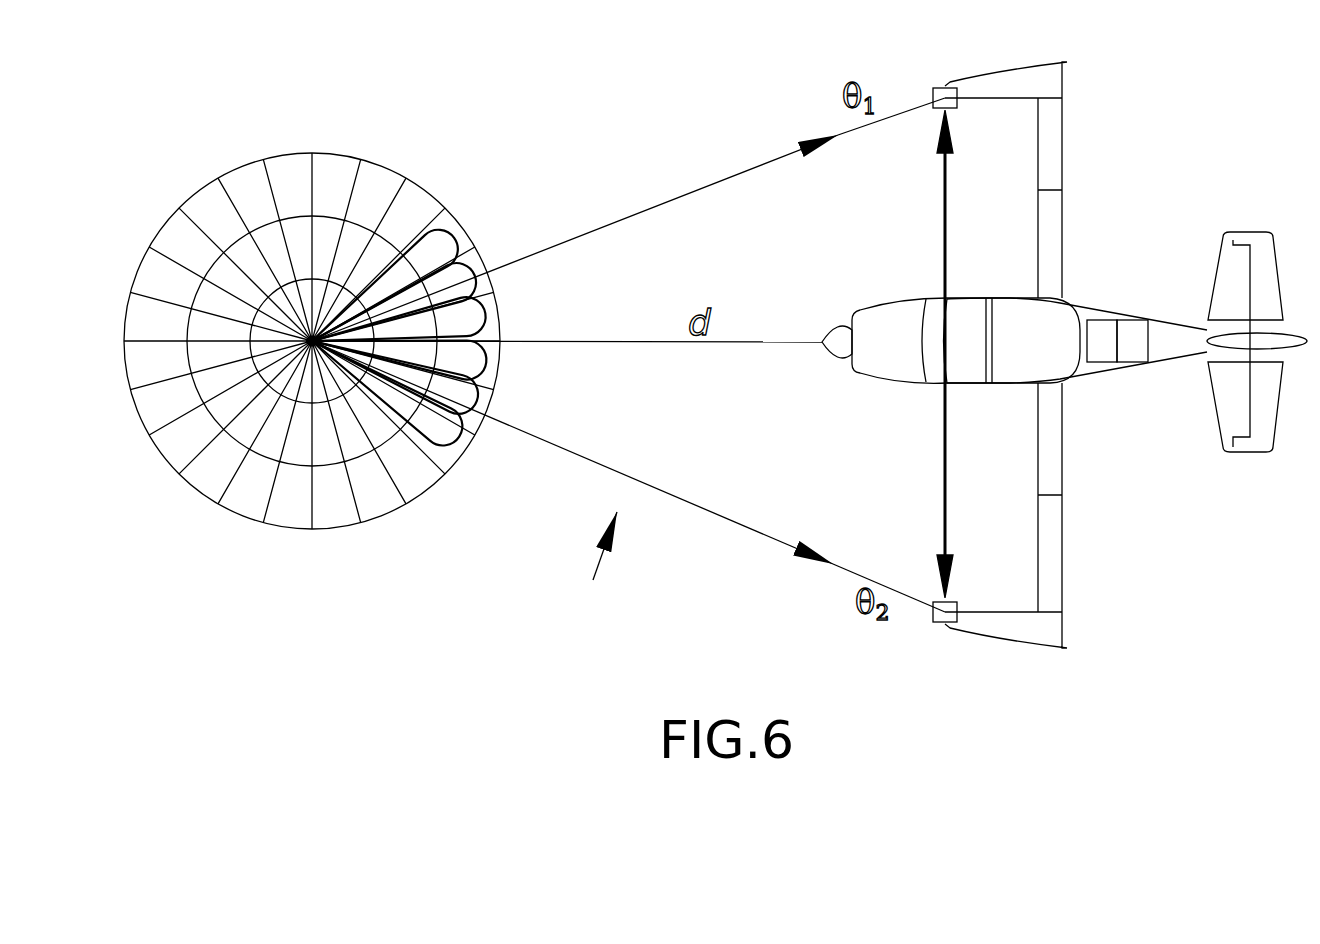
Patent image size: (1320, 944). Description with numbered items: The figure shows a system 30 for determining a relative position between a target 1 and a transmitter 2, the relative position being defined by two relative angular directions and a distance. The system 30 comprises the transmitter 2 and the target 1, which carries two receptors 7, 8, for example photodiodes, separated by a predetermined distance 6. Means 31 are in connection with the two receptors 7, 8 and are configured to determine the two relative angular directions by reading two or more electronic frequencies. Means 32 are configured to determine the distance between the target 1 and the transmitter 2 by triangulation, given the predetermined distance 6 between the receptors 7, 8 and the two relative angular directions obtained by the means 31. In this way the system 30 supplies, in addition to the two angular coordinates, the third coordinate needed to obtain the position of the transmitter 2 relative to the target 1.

The target 1 is at (1163, 135).
The transmitter 2 is at (312, 341).
The predetermined distance 6 is at (953, 354).
The receptor 7 is at (945, 85).
The receptor 8 is at (938, 622).
The system 30 is at (594, 567).
The means for determining relative angular directions 31 is at (1097, 330).
The means for determining distance 32 is at (1135, 355).